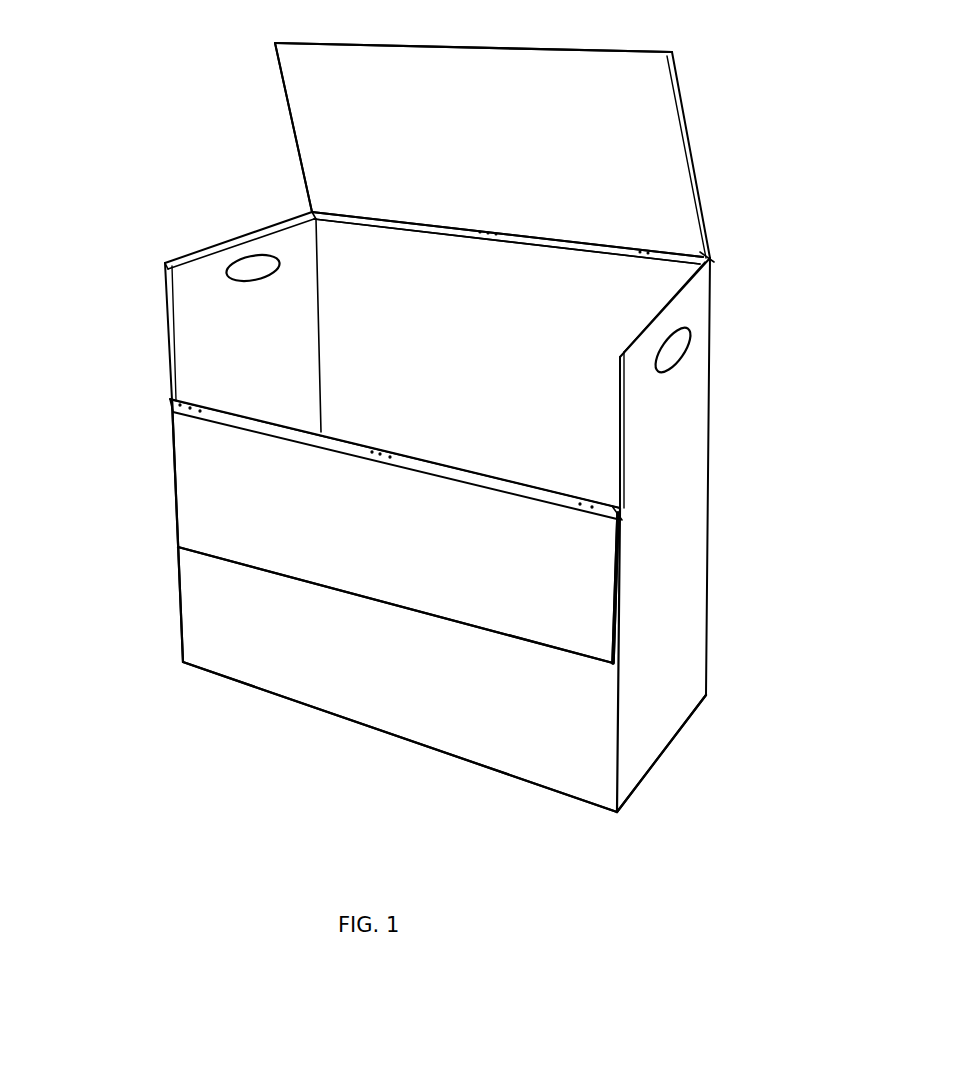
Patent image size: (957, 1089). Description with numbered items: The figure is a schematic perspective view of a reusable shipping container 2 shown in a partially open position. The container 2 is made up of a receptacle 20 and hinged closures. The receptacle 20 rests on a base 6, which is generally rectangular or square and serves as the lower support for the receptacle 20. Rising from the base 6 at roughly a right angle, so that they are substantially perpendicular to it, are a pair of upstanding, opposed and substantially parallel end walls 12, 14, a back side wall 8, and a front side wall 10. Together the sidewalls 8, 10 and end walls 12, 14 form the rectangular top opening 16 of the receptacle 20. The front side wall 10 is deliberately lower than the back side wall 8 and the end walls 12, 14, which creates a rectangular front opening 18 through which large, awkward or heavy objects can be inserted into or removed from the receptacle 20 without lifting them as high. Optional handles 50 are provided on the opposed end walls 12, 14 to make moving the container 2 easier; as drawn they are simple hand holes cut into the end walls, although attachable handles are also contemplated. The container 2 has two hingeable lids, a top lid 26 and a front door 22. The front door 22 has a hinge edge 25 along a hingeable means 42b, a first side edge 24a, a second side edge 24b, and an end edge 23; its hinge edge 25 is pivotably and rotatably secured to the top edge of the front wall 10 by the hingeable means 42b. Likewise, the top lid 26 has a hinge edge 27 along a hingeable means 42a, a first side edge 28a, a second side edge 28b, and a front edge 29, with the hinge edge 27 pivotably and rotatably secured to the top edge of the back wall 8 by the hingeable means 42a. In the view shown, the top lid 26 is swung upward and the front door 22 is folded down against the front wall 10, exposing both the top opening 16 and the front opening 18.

The reusable shipping container 2 is at (72, 469).
The base 6 is at (368, 730).
The back side wall 8 is at (472, 329).
The front side wall 10 is at (247, 648).
The end wall 12 is at (675, 682).
The end wall 14 is at (215, 246).
The rectangular top opening 16 is at (317, 248).
The front opening 18 is at (276, 358).
The receptacle 20 is at (840, 655).
The front door 22 is at (380, 531).
The end edge 23 is at (380, 600).
The first side edge 24a is at (618, 597).
The second side edge 24b is at (175, 490).
The hinge edge 25 is at (390, 452).
The top lid 26 is at (500, 148).
The hinge edge 27 is at (483, 230).
The first side edge 28a is at (695, 152).
The second side edge 28b is at (287, 107).
The front edge 29 is at (488, 52).
The hingeable means 42a is at (712, 258).
The hingeable means 42b is at (618, 513).
The handle 50 is at (698, 337).